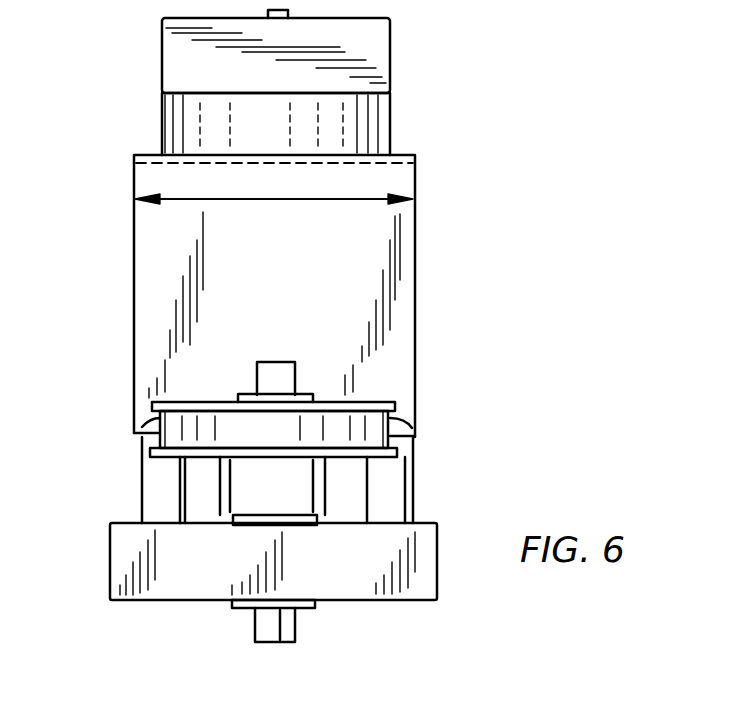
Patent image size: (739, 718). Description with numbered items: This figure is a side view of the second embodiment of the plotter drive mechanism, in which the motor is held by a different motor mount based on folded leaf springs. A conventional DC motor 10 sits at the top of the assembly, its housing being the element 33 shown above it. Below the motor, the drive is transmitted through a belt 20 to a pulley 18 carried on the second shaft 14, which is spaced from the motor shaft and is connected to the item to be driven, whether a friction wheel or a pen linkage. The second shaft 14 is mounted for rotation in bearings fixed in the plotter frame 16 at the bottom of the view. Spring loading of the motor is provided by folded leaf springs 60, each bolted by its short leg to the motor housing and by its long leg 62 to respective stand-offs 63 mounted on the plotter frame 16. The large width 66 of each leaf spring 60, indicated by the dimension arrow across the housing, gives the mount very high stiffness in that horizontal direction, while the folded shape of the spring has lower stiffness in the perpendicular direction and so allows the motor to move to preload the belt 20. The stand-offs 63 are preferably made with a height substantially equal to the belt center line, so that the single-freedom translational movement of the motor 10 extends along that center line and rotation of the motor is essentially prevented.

The upper housing block 33 is at (376, 52).
The DC motor 10 is at (378, 119).
The folded leaf spring 60 is at (425, 285).
The large width of leaf spring 66 is at (270, 201).
The long leg 62 is at (336, 336).
The belt 20 is at (362, 402).
The pulley 18 is at (148, 452).
The stand-off 63 is at (140, 500).
The plotter frame 16 is at (425, 563).
The second shaft 14 is at (290, 627).